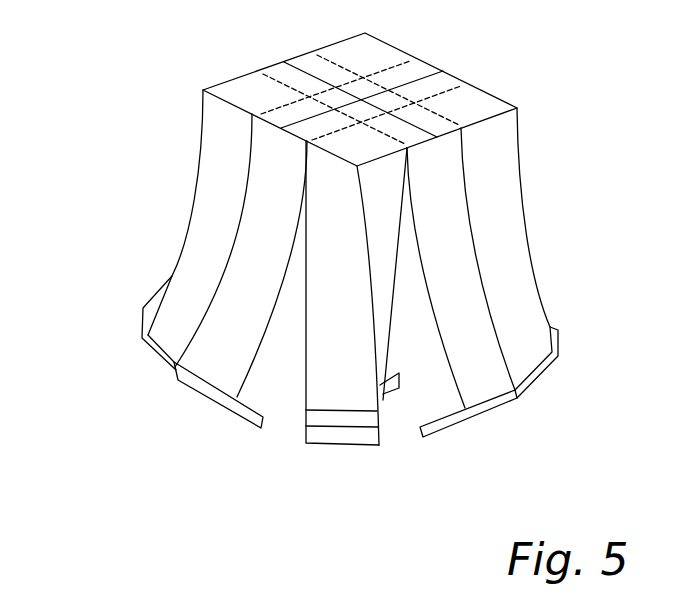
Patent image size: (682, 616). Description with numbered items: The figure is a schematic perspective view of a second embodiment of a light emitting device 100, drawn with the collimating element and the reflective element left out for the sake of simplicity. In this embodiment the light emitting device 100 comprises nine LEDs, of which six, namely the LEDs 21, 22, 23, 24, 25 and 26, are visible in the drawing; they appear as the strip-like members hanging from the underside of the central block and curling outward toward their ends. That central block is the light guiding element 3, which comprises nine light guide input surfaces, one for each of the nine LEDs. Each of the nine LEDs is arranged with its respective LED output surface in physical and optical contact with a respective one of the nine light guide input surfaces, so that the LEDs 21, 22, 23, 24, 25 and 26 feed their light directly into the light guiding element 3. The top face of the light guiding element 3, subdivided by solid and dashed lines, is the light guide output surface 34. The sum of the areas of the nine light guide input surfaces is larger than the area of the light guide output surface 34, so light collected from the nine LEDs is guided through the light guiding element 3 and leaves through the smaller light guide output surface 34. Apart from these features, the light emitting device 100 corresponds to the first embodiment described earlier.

The light emitting device 100 is at (133, 133).
The light guiding element 3 is at (517, 176).
The light guide output surface 34 is at (467, 108).
The LED 21 is at (158, 357).
The LED 22 is at (197, 394).
The LED 23 is at (350, 430).
The LED 24 is at (397, 388).
The LED 25 is at (483, 413).
The LED 26 is at (543, 367).